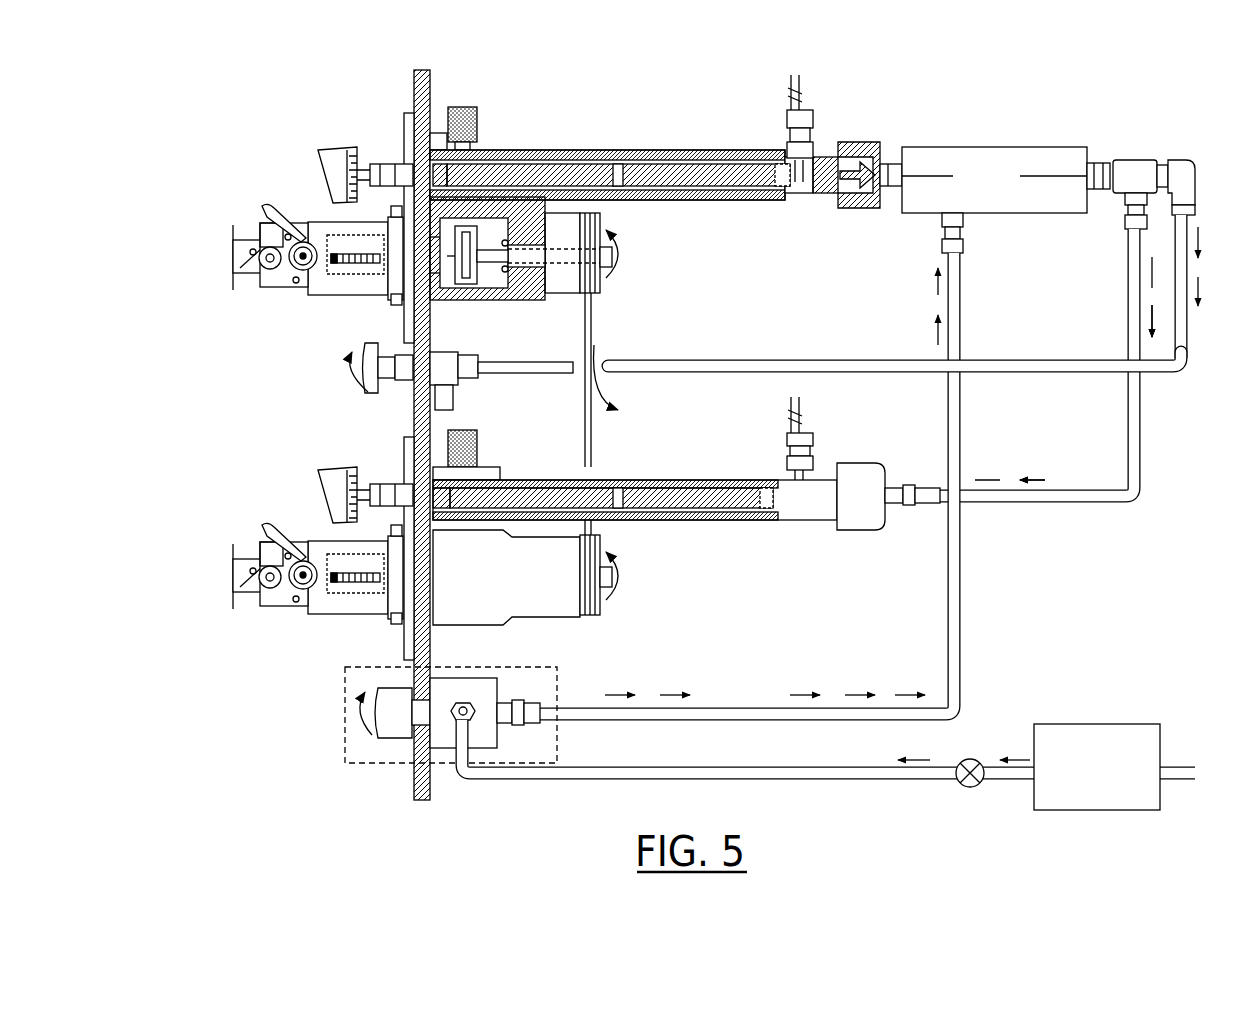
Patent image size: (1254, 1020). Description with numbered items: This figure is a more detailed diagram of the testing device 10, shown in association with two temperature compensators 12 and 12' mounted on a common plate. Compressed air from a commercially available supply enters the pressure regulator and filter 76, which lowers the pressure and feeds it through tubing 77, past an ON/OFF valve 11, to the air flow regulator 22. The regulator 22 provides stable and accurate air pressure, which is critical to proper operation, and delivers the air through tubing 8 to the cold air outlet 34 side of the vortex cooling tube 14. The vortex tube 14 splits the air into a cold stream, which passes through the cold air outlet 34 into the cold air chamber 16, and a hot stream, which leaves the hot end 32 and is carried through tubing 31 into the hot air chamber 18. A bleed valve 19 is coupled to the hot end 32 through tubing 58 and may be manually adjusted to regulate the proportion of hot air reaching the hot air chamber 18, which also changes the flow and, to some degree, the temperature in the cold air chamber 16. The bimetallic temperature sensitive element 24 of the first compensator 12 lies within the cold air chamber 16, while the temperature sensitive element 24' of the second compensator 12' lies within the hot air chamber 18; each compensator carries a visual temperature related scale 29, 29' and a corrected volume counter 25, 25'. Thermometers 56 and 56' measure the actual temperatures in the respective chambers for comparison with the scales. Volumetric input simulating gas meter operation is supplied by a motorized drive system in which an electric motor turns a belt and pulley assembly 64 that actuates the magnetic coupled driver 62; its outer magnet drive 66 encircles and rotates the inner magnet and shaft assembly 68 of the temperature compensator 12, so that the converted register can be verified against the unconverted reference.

The tubing 8 is at (954, 606).
The testing device 10 is at (1122, 614).
The ON/OFF valve 11 is at (972, 787).
The temperature compensator 12 is at (232, 276).
The temperature compensator 12' is at (259, 599).
The vortex cooling tube 14 is at (977, 150).
The cold air chamber 16 is at (609, 147).
The hot air chamber 18 is at (722, 533).
The bleed valve 19 is at (381, 395).
The air flow regulator 22 is at (345, 718).
The bimetallic temperature sensitive element 24 is at (611, 141).
The temperature sensitive element 24' is at (603, 563).
The corrected volume counter 25 is at (354, 278).
The corrected volume counter 25' is at (348, 606).
The visual temperature related scale 29 is at (339, 142).
The temperature related scale 29' is at (332, 470).
The tubing 31 is at (1143, 422).
The hot end 32 is at (1097, 165).
The cold air outlet 34 is at (882, 165).
The thermometer 56 is at (836, 112).
The thermometer 56' is at (834, 428).
The tubing 58 is at (773, 362).
The magnetic coupled driver 62 is at (447, 305).
The belt and pulley assembly 64 is at (598, 310).
The outer magnet drive 66 is at (462, 283).
The inner magnet and shaft assembly 68 is at (468, 290).
The pressure regulator and filter 76 is at (1080, 784).
The tubing 77 is at (788, 778).